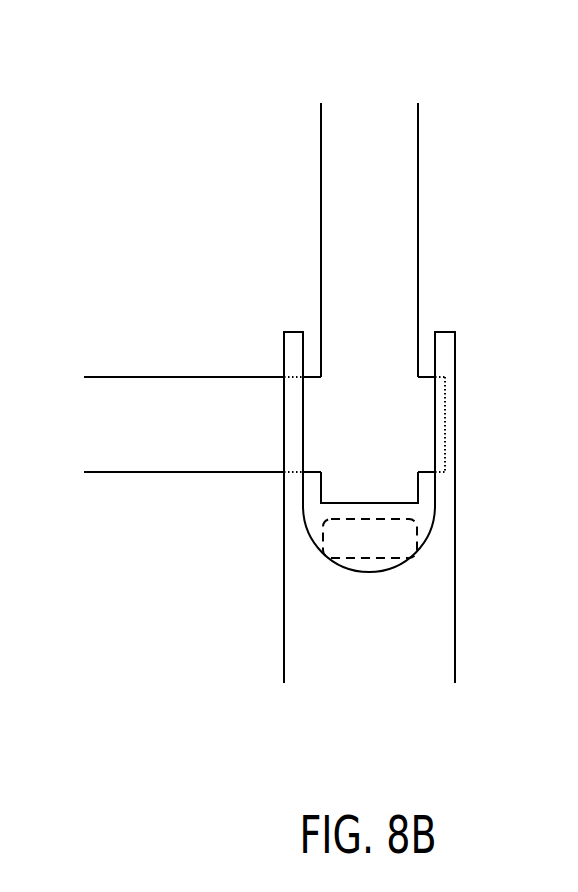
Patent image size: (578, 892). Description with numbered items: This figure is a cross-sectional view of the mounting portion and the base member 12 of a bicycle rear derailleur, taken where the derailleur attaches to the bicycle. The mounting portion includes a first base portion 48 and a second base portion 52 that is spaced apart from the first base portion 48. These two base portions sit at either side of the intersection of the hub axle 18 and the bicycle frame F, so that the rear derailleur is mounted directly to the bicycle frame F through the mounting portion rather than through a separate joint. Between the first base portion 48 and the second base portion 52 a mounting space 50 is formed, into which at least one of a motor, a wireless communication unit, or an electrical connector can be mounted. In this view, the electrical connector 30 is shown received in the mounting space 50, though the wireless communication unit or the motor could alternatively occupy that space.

The bicycle frame F is at (418, 192).
The hub axle 18 is at (228, 377).
The base member 12 is at (268, 640).
The first base portion 48 is at (284, 433).
The second base portion 52 is at (455, 433).
The mounting space 50 is at (424, 534).
The electrical connector 30 is at (369, 547).